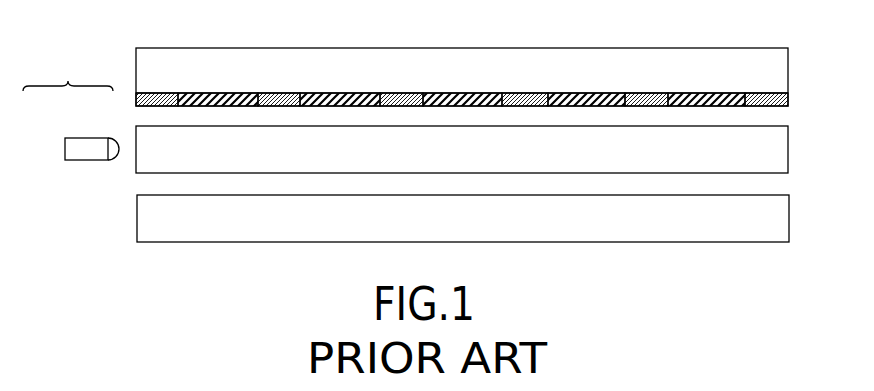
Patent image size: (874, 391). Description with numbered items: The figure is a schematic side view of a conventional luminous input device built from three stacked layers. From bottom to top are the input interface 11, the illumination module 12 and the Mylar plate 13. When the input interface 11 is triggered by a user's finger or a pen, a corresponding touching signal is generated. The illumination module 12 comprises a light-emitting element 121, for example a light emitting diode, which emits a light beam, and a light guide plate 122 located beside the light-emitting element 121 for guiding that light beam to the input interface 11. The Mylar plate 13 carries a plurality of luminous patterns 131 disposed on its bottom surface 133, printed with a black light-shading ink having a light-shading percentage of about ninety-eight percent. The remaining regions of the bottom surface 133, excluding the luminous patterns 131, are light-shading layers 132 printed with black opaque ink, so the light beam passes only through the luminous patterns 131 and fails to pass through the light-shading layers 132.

The input interface 11 is at (737, 232).
The illumination module 12 is at (68, 73).
The light-emitting element 121 is at (87, 147).
The light guide plate 122 is at (148, 135).
The Mylar plate 13 is at (778, 83).
The luminous patterns 131 is at (487, 95).
The light-shading layers 132 is at (400, 95).
The bottom surface 133 is at (683, 93).